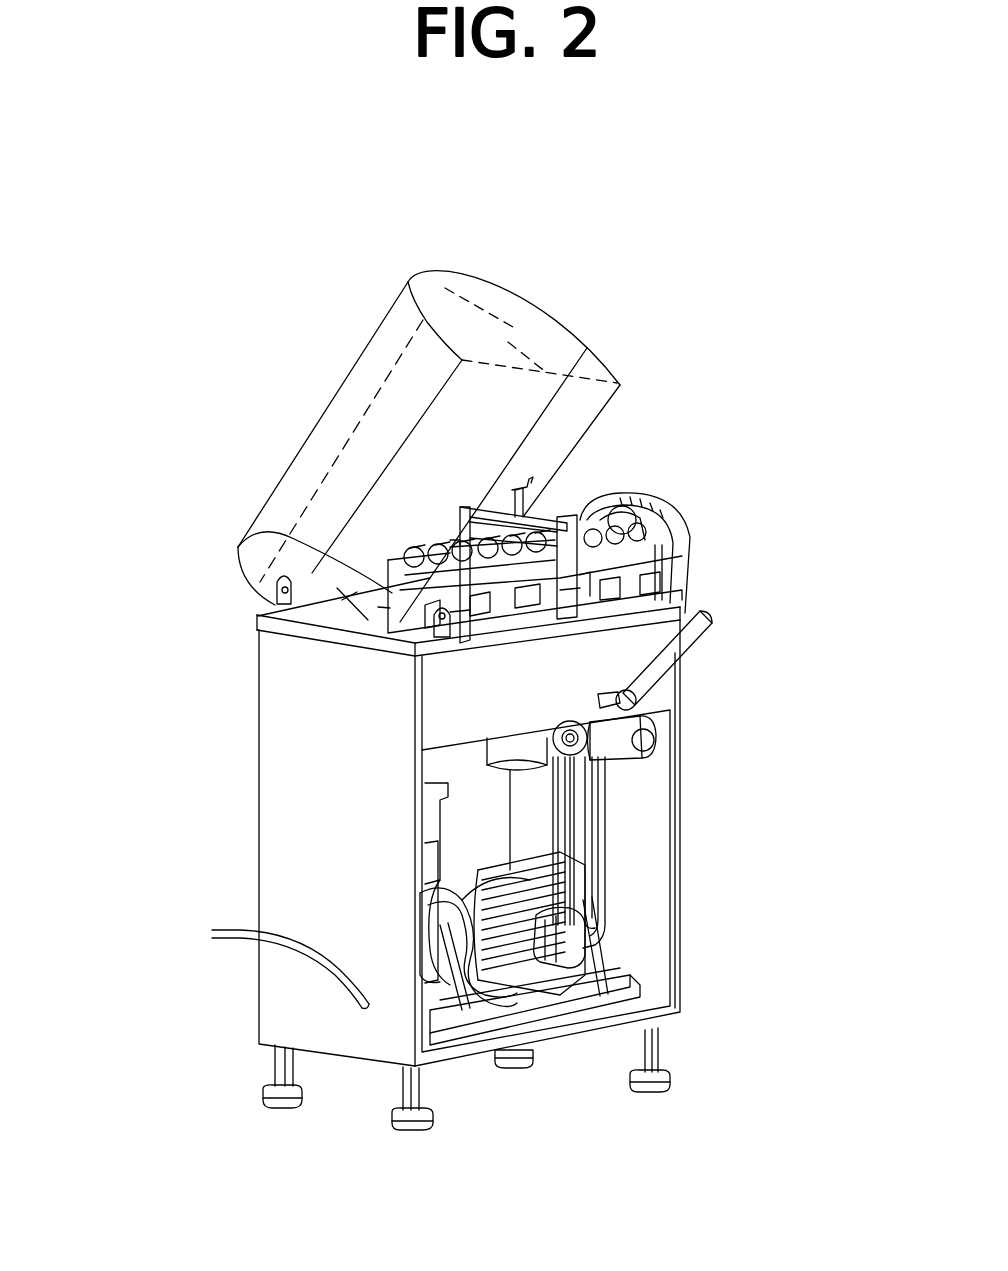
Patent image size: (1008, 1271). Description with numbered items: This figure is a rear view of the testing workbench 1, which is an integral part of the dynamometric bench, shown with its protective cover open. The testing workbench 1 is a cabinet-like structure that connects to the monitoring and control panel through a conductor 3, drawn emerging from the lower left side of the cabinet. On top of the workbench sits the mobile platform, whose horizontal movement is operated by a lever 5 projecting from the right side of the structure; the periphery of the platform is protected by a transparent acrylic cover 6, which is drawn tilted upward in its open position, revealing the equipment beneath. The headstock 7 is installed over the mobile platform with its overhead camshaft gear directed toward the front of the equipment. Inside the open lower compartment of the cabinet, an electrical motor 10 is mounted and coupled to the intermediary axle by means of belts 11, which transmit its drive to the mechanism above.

The testing workbench 1 is at (300, 800).
The conductor 3 is at (240, 933).
The lever 5 is at (715, 630).
The transparent acrylic cover 6 is at (317, 447).
The headstock 7 is at (640, 563).
The electrical motor 10 is at (550, 937).
The belts 11 is at (593, 868).